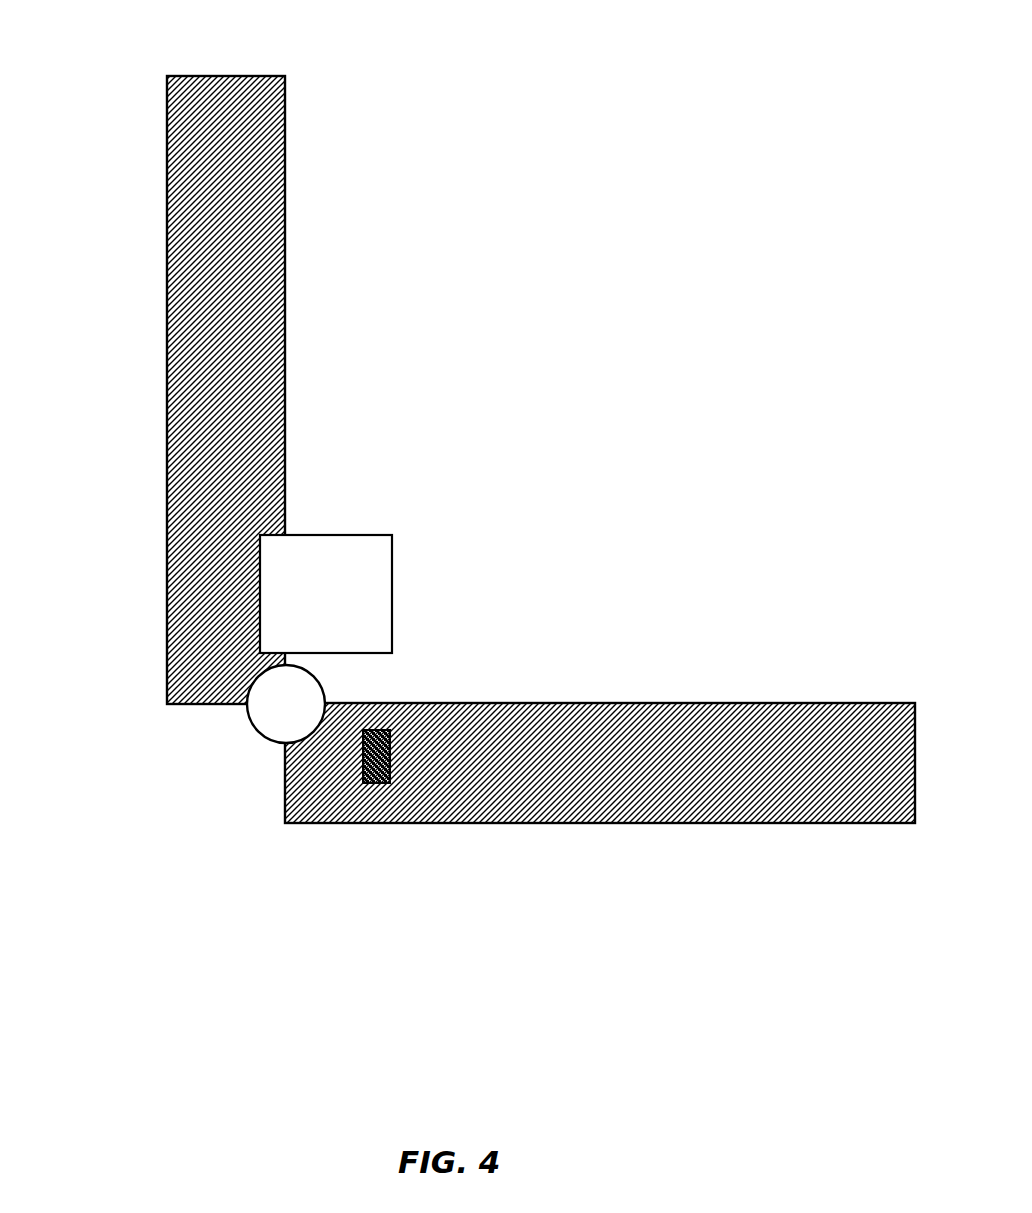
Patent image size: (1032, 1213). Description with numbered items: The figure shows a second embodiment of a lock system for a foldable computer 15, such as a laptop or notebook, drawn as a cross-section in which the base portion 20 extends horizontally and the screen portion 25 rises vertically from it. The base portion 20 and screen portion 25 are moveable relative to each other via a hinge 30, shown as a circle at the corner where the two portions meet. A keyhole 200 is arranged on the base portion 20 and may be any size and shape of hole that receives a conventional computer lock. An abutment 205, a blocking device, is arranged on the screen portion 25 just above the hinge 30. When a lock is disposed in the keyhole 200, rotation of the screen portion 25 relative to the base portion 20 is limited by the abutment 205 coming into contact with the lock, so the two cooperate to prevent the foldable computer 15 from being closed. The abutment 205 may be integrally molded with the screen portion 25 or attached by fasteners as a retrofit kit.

The foldable computer 15 is at (466, 472).
The base portion 20 is at (292, 823).
The screen portion 25 is at (285, 262).
The hinge 30 is at (255, 733).
The keyhole 200 is at (392, 791).
The abutment 205 is at (384, 528).